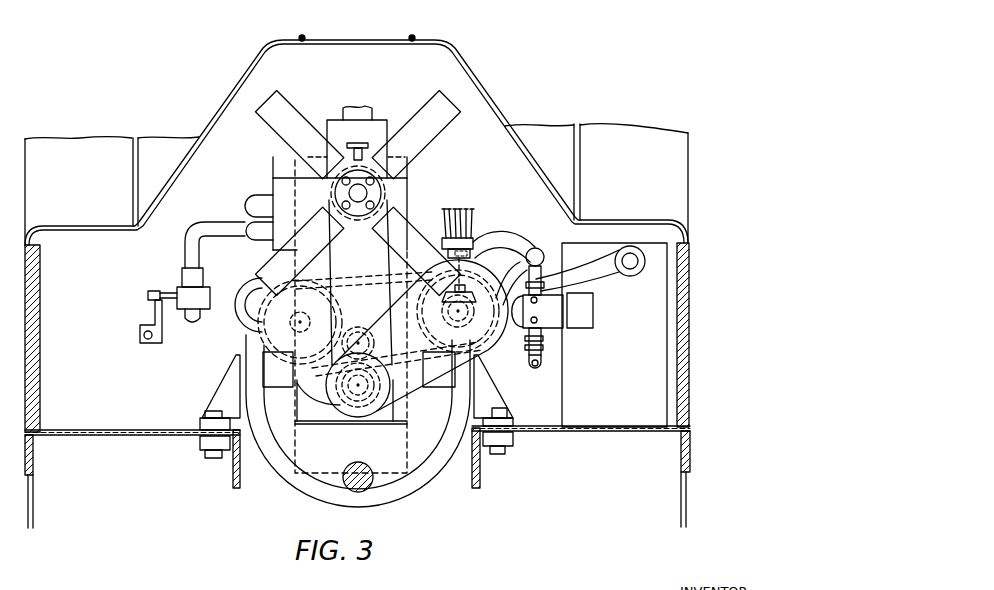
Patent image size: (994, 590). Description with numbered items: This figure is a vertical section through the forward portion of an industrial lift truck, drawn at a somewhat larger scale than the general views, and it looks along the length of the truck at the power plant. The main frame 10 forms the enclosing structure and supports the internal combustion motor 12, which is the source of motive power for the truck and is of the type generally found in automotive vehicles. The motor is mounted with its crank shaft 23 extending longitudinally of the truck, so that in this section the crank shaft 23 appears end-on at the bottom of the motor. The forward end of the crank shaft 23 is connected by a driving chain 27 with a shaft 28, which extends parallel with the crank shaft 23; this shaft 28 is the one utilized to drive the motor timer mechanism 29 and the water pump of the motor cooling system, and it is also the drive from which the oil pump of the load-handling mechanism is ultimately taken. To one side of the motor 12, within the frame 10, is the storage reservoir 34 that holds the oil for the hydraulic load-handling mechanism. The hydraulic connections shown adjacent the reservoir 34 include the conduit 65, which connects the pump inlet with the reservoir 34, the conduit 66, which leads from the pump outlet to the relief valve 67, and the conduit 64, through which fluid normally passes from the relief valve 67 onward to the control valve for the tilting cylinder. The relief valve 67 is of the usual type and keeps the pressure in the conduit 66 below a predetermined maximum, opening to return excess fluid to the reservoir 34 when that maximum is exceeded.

The main frame 10 is at (233, 473).
The internal combustion motor 12 is at (405, 198).
The crank shaft 23 is at (350, 418).
The driving chain 27 is at (463, 387).
The shaft 28 is at (462, 316).
The motor timer mechanism 29 is at (481, 238).
The storage reservoir 34 is at (614, 335).
The conduit 64 is at (544, 357).
The conduit 65 is at (567, 274).
The conduit 66 is at (506, 268).
The relief valve 67 is at (523, 255).